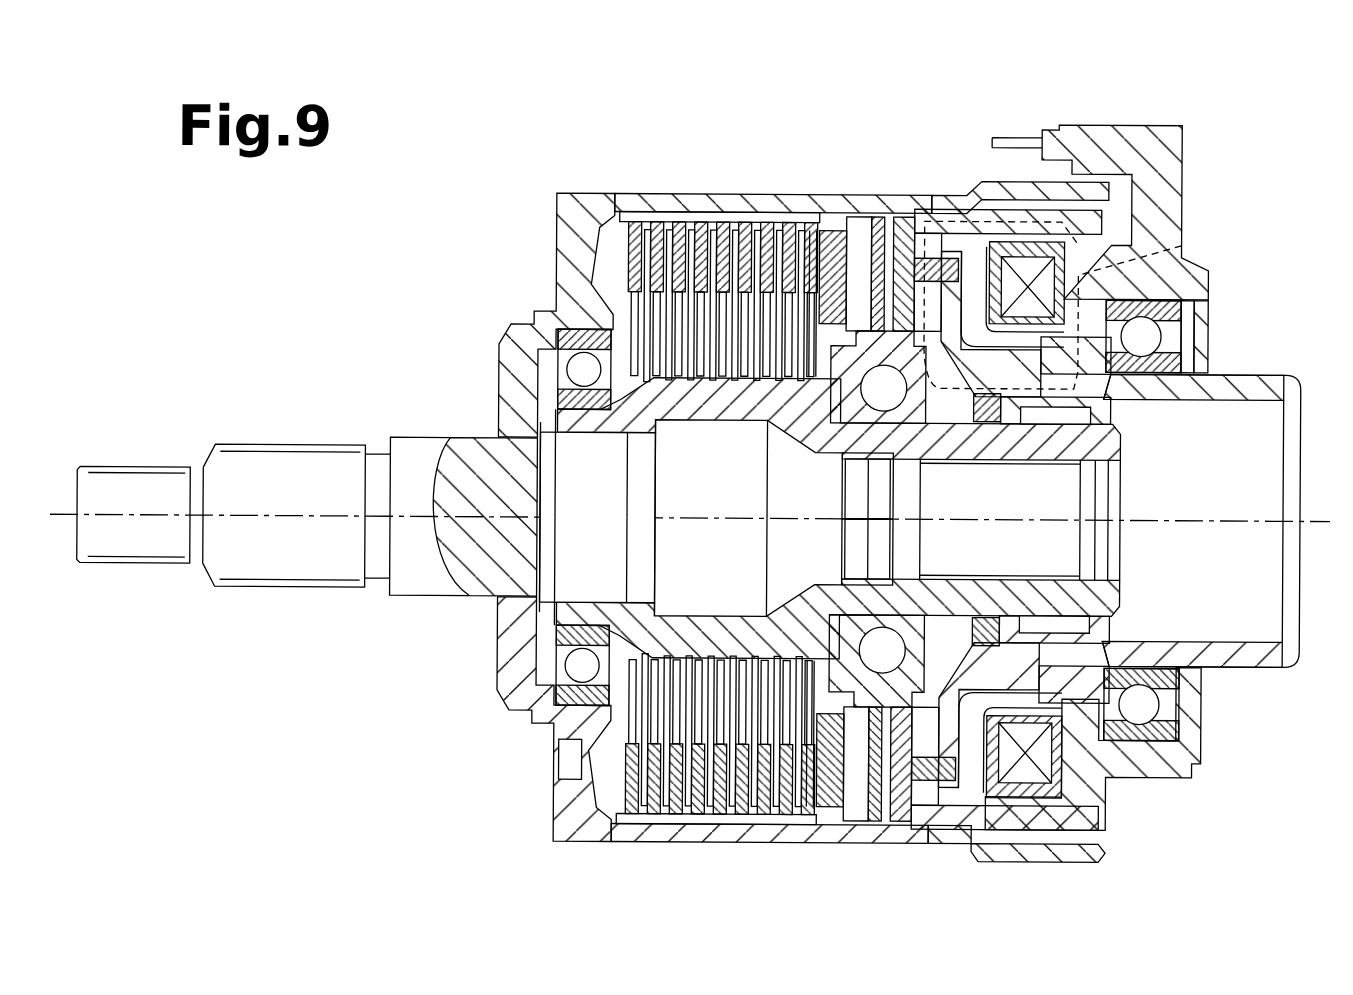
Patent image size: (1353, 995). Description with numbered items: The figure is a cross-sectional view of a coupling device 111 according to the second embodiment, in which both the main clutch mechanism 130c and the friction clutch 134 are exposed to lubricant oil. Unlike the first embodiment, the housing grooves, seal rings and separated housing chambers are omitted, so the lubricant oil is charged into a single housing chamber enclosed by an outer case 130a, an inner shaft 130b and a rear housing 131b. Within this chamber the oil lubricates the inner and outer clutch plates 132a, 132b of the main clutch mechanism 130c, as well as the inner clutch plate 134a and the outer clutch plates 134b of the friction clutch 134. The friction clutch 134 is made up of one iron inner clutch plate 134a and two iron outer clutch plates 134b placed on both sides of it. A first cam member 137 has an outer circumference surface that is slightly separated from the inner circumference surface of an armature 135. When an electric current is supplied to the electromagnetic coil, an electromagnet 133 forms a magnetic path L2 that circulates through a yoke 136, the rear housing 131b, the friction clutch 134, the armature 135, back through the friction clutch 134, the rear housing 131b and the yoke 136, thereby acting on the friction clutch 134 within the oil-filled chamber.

The device 111 is at (1262, 112).
The outer case 130a is at (633, 190).
The inner shaft 130b is at (688, 382).
The main clutch mechanism 130c is at (777, 192).
The rear housing 131b is at (1086, 232).
The inner clutch plates 132a is at (722, 372).
The outer clutch plates 132b is at (678, 224).
The electromagnet 133 is at (1062, 358).
The friction clutch 134 is at (916, 195).
The inner clutch plate 134a is at (948, 352).
The outer clutch plates 134b is at (912, 197).
The armature 135 is at (883, 223).
The yoke 136 is at (1208, 766).
The first cam member 137 is at (521, 516).
The magnetic path L2 is at (1180, 243).